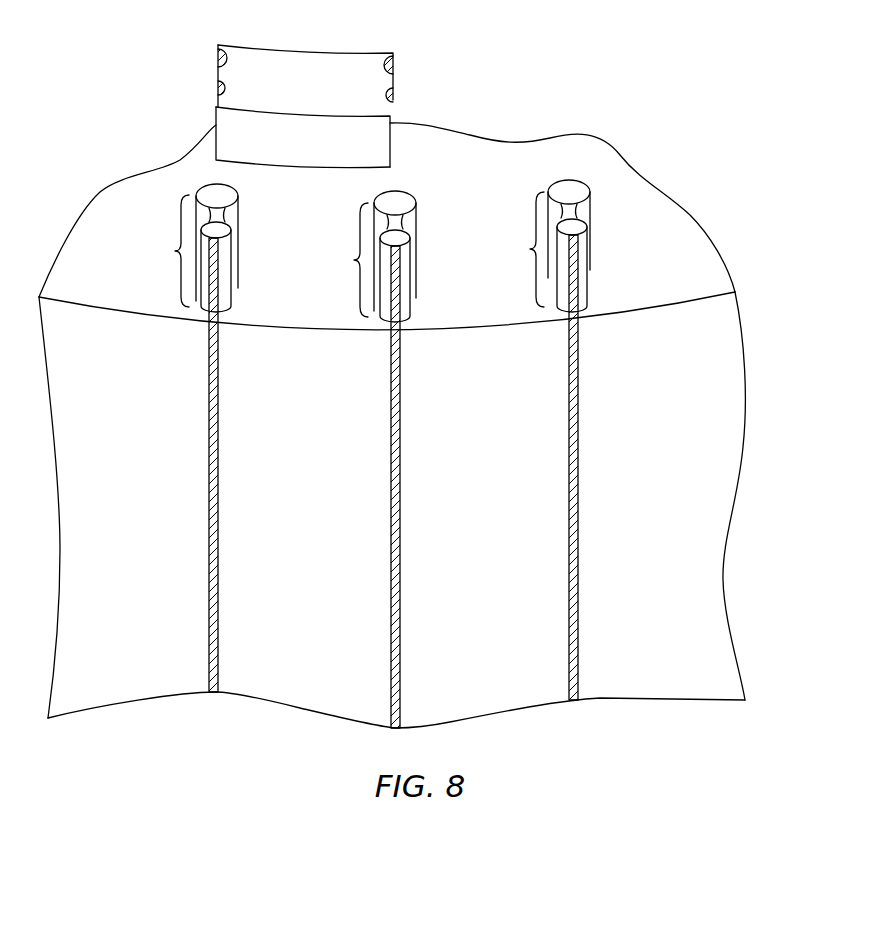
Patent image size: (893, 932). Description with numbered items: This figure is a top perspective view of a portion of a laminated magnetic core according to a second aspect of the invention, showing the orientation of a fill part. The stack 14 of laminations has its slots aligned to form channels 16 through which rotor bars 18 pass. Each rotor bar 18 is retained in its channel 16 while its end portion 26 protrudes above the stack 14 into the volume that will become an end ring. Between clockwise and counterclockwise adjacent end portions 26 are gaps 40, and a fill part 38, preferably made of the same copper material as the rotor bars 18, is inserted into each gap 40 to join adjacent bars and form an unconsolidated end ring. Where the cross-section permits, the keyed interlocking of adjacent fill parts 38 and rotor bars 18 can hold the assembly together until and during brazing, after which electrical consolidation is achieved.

The stack 14 is at (738, 448).
The channels 16 is at (582, 505).
The rotor bar 18 is at (226, 230).
The rotor bar end portions 26 is at (344, 254).
The fill part 38 is at (313, 63).
The gaps 40 is at (305, 312).